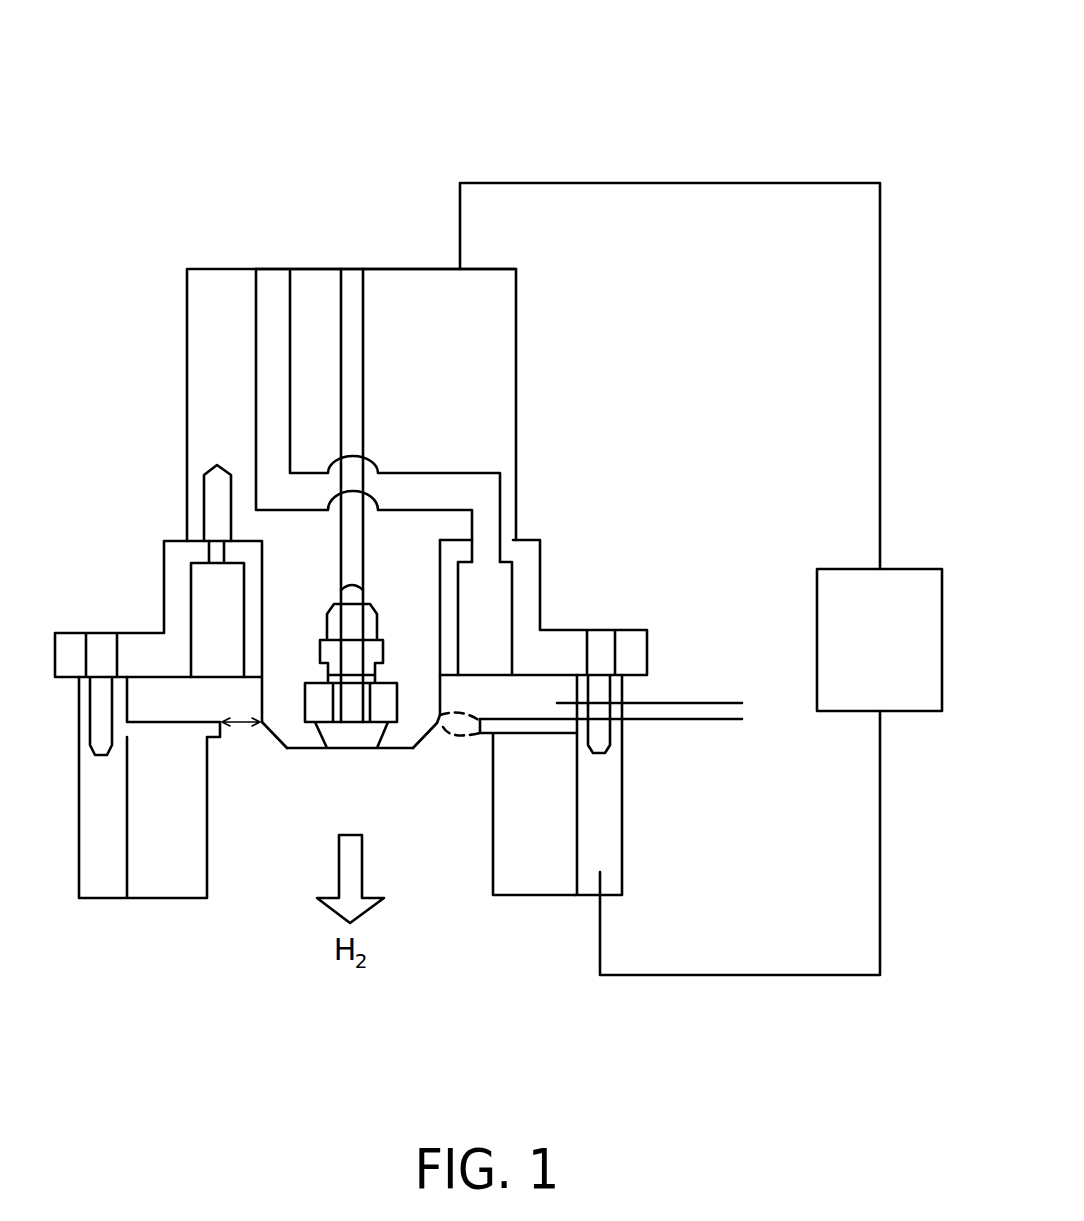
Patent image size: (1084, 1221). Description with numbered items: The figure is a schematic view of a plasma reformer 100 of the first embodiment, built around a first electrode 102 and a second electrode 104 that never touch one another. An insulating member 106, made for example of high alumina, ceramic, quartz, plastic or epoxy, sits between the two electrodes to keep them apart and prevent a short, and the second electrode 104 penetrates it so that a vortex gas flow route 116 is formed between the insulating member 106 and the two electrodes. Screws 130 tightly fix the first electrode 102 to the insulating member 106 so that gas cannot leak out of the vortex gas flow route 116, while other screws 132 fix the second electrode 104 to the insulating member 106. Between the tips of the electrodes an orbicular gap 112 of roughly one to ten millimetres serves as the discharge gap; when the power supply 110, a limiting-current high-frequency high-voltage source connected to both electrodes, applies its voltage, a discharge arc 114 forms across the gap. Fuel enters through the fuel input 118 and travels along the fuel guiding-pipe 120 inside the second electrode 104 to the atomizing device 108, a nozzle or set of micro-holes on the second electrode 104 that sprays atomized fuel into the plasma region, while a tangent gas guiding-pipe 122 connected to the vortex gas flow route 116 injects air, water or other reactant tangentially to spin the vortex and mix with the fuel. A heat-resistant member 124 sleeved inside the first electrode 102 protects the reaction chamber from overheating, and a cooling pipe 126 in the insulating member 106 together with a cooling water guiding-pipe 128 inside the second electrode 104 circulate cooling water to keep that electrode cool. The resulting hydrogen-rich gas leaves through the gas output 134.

The plasma reformer 100 is at (591, 110).
The first electrode 102 is at (602, 820).
The second electrode 104 is at (493, 343).
The insulating member 106 is at (562, 652).
The atomizing device 108 is at (368, 750).
The power supply 110 is at (848, 569).
The orbicular gap 112 is at (240, 723).
The discharge arc 114 is at (462, 733).
The vortex gas flow route 116 is at (164, 703).
The fuel input 118 is at (367, 244).
The fuel guiding-pipe 120 is at (365, 347).
The tangent gas guiding-pipe 122 is at (695, 710).
The heat-resistant member 124 is at (532, 865).
The cooling pipe 126 is at (490, 598).
The cooling water guiding-pipe 128 is at (252, 338).
The screws 130 is at (102, 653).
The screws 132 is at (204, 503).
The gas output 134 is at (250, 880).